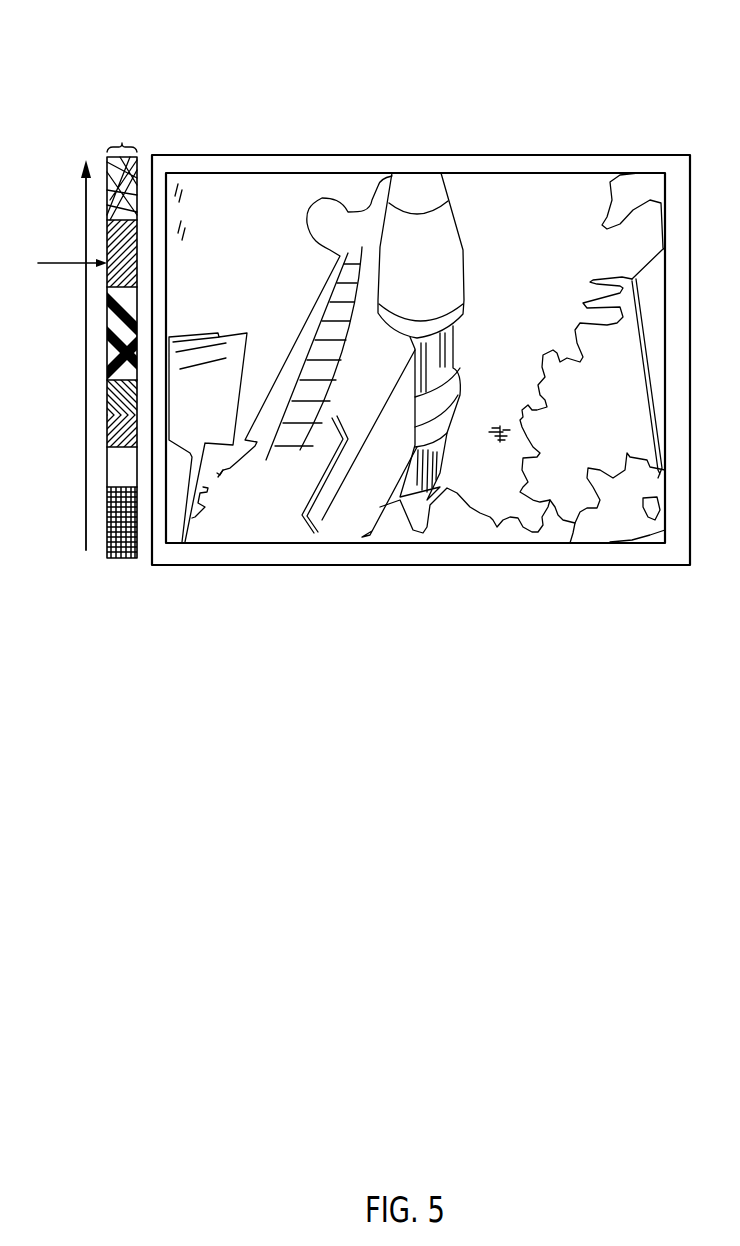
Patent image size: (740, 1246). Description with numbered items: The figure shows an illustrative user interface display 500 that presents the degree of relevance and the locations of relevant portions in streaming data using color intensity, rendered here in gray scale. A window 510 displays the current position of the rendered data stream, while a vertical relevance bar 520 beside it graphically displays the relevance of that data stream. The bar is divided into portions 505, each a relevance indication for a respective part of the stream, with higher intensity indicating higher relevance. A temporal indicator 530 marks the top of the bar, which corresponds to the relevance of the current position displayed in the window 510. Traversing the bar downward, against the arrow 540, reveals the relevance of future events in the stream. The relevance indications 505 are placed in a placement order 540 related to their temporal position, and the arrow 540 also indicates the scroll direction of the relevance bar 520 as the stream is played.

The display 500 is at (478, 46).
The relevance indications 505 is at (127, 177).
The window 510 is at (250, 224).
The relevance bar 520 is at (122, 136).
The temporal indicator 530 is at (60, 263).
The placement order arrow 540 is at (86, 513).